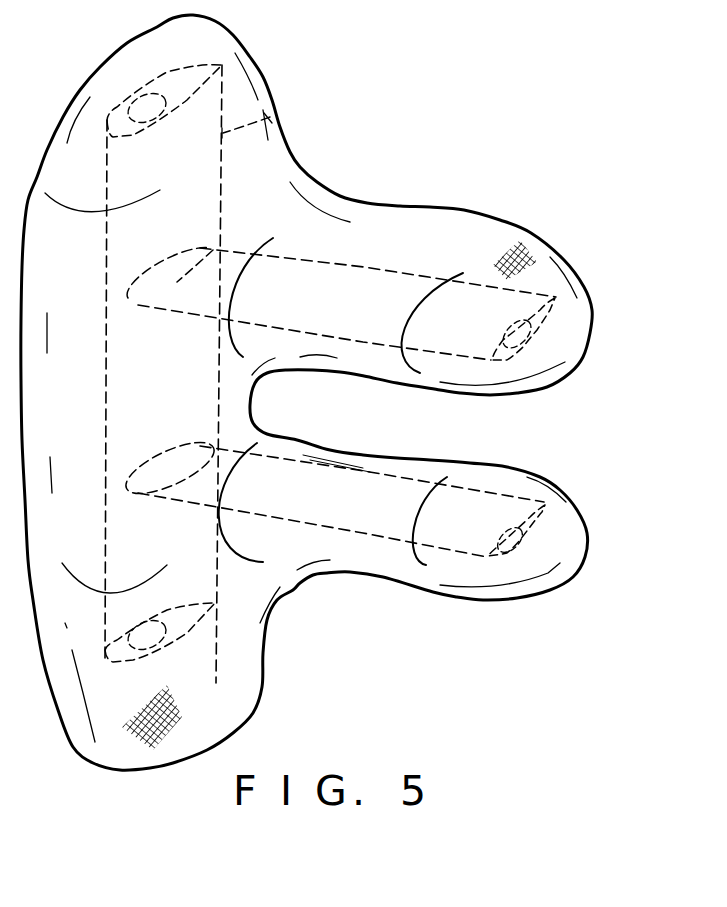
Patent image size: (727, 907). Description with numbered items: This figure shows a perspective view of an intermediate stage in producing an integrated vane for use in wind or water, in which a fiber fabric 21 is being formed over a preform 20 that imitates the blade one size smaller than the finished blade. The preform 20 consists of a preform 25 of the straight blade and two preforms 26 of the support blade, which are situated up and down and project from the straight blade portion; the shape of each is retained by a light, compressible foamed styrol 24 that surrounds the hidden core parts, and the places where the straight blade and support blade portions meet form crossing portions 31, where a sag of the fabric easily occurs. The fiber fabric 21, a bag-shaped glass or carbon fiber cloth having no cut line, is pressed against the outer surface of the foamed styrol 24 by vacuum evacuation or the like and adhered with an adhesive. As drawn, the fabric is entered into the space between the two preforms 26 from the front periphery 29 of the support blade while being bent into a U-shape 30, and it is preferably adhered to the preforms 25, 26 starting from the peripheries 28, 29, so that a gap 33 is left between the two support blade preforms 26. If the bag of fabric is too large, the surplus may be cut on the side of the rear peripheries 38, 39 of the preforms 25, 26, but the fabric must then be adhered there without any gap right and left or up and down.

The preform 20 is at (263, 186).
The fiber fabric 21 is at (583, 552).
The foamed styrol 24 is at (172, 90).
The preform of the straight blade 25 is at (102, 433).
The preform of the support blade 26 is at (331, 267).
The periphery of the straight blade preform 28 is at (107, 277).
The front periphery of the support blade 29 is at (313, 336).
The U-shape 30 is at (221, 320).
The crossing portion 31 is at (163, 253).
The gap 33 is at (489, 428).
The rear periphery of the straight blade preform 38 is at (277, 107).
The rear periphery of the support blade preform 39 is at (420, 278).